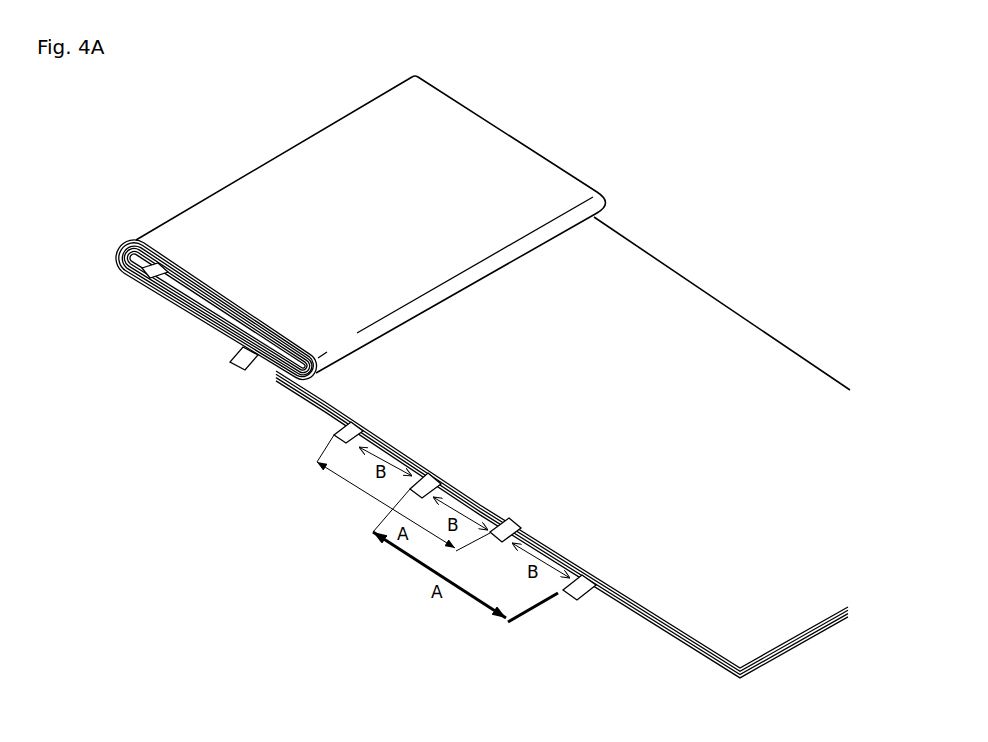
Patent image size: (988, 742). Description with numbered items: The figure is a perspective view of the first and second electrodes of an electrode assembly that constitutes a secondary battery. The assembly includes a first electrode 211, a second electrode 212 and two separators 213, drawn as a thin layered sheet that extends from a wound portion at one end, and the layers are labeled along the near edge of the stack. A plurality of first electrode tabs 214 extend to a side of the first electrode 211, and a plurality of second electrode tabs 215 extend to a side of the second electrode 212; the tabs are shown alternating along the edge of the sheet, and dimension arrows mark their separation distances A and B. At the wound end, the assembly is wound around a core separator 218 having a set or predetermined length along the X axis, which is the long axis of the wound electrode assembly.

The first electrode 211 is at (755, 675).
The second electrode 212 is at (716, 663).
The separator 213 is at (740, 677).
The first electrode tab 214 is at (139, 290).
The second electrode tab 215 is at (232, 370).
The core separator 218 is at (115, 267).